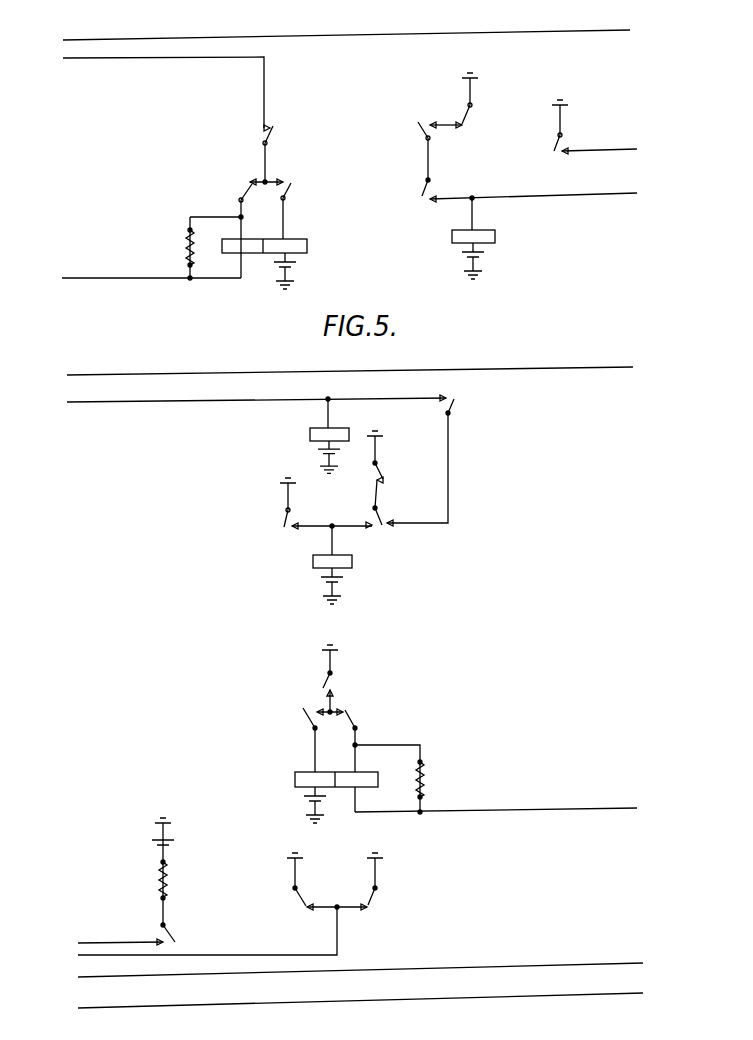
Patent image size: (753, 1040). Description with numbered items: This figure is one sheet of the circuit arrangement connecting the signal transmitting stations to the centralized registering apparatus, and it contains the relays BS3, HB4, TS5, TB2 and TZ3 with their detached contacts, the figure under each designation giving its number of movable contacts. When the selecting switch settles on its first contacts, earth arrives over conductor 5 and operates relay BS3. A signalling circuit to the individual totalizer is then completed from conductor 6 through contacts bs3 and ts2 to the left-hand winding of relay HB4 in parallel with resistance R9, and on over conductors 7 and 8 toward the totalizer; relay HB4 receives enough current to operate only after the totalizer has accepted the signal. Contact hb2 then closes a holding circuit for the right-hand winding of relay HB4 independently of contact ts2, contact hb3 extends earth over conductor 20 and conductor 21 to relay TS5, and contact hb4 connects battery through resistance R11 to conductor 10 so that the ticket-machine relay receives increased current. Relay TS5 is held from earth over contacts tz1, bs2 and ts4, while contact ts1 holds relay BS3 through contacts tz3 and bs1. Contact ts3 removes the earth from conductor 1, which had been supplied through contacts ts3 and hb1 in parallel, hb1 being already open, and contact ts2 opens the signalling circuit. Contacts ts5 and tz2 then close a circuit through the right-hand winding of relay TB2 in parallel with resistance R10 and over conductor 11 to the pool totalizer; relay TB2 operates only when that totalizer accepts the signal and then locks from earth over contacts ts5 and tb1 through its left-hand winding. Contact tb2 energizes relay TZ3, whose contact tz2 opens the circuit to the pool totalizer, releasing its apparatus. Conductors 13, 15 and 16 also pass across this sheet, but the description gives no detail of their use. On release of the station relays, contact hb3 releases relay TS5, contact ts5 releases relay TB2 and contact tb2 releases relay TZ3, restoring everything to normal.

The conductor 1 is at (92, 968).
The conductor 5 is at (256, 395).
The conductor 6 is at (163, 85).
The conductor 7 is at (151, 271).
The conductor 8 is at (350, 363).
The conductor 10 is at (120, 937).
The conductor 11 is at (496, 802).
The conductor 13 is at (360, 994).
The conductor 15 is at (346, 36).
The conductor 16 is at (360, 950).
The conductor 20 is at (599, 143).
The conductor 21 is at (533, 189).
The resistance R9 is at (196, 248).
The resistance R10 is at (409, 779).
The resistance R11 is at (179, 871).
The relay HB HB4 is at (340, 247).
The relay TS TS5 is at (523, 238).
The relay BS BS3 is at (304, 436).
The relay TZ TZ3 is at (305, 563).
The relay TB TB2 is at (290, 778).
The contact of relay BS bs1 is at (449, 456).
The contact of relay BS bs2 is at (413, 136).
The contact of relay BS bs3 is at (290, 144).
The contact of relay TS ts1 is at (400, 469).
The contact of relay TS ts2 is at (226, 222).
The contact of relay TS ts3 is at (397, 887).
The contact of relay TS ts4 is at (415, 204).
The contact of relay TS ts5 is at (351, 680).
The contact of relay TZ tz1 is at (475, 106).
The contact of relay TZ tz2 is at (379, 740).
The contact of relay TZ tz3 is at (357, 534).
The contact of relay TB tb1 is at (280, 737).
The contact of relay TB tb2 is at (262, 506).
The contact of relay HB hb1 is at (327, 881).
The contact of relay HB hb2 is at (317, 198).
The contact of relay HB hb3 is at (558, 145).
The contact of relay HB hb4 is at (203, 931).